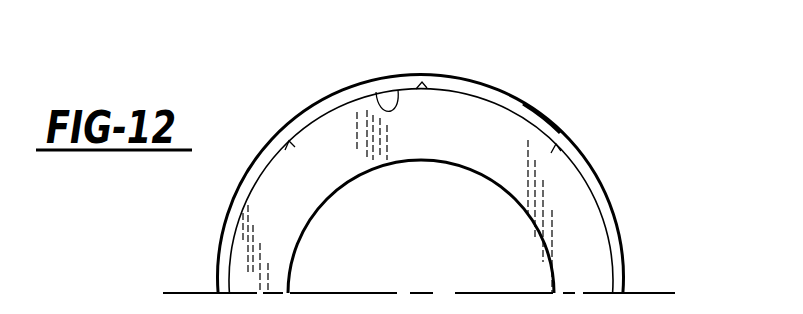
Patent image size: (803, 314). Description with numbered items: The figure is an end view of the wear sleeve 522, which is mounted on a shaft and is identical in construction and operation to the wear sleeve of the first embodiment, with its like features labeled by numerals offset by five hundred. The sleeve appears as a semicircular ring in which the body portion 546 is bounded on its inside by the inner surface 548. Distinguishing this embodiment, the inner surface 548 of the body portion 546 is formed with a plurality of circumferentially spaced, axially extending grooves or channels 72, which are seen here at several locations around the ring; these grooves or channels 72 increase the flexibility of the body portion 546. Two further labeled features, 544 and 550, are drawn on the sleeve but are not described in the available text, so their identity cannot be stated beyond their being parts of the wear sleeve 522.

The wear sleeve 522 is at (293, 121).
The inner arcuate wall 544 is at (463, 78).
The body portion 546 is at (521, 106).
The inner surface 548 is at (376, 92).
The web region 550 is at (508, 147).
The grooves or channels 72 is at (293, 146).